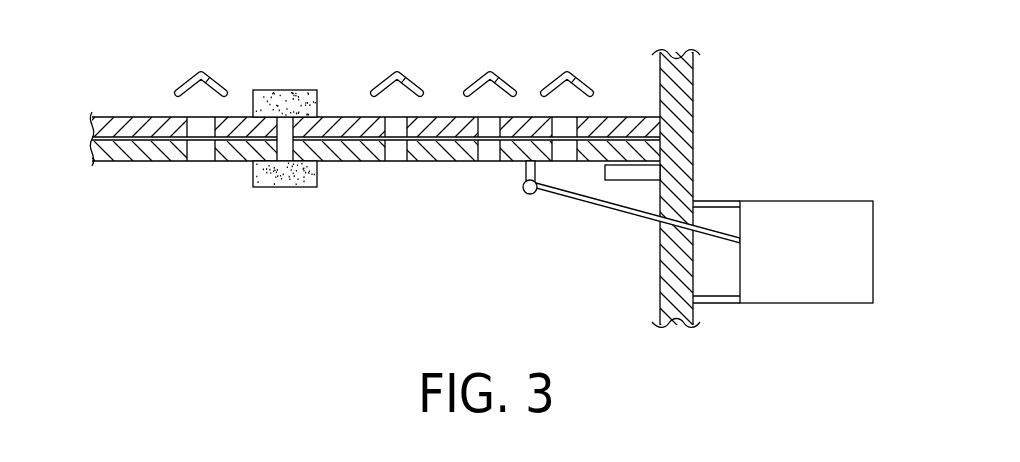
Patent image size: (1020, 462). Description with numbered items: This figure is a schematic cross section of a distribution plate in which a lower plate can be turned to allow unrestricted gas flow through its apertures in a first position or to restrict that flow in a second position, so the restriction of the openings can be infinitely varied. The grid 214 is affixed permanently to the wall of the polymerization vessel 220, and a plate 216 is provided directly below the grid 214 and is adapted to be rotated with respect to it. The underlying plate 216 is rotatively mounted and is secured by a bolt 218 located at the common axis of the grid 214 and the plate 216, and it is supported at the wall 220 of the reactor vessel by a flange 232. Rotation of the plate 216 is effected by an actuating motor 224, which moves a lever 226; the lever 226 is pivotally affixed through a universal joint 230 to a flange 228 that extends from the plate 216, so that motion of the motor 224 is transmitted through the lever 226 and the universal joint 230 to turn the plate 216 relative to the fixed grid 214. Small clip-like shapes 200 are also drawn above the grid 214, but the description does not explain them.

The clips 200 is at (407, 76).
The grid 214 is at (135, 117).
The plate 216 is at (145, 161).
The bolt 218 is at (282, 90).
The wall of the polymerization vessel 220 is at (693, 97).
The actuating motor 224 is at (818, 201).
The lever 226 is at (636, 221).
The flange 228 is at (526, 172).
The universal joint 230 is at (519, 195).
The flange 232 is at (620, 181).